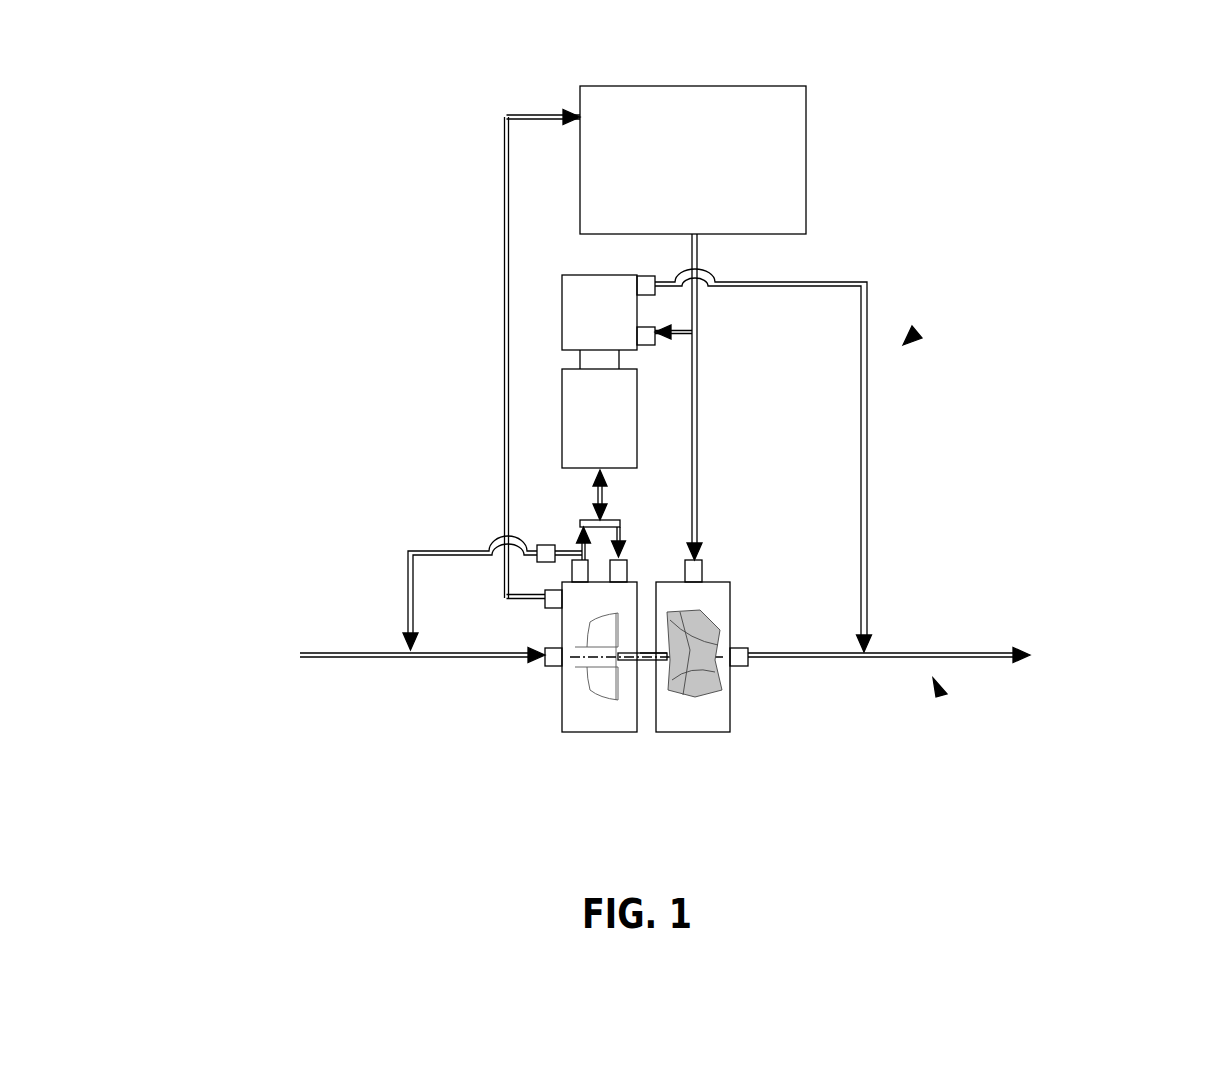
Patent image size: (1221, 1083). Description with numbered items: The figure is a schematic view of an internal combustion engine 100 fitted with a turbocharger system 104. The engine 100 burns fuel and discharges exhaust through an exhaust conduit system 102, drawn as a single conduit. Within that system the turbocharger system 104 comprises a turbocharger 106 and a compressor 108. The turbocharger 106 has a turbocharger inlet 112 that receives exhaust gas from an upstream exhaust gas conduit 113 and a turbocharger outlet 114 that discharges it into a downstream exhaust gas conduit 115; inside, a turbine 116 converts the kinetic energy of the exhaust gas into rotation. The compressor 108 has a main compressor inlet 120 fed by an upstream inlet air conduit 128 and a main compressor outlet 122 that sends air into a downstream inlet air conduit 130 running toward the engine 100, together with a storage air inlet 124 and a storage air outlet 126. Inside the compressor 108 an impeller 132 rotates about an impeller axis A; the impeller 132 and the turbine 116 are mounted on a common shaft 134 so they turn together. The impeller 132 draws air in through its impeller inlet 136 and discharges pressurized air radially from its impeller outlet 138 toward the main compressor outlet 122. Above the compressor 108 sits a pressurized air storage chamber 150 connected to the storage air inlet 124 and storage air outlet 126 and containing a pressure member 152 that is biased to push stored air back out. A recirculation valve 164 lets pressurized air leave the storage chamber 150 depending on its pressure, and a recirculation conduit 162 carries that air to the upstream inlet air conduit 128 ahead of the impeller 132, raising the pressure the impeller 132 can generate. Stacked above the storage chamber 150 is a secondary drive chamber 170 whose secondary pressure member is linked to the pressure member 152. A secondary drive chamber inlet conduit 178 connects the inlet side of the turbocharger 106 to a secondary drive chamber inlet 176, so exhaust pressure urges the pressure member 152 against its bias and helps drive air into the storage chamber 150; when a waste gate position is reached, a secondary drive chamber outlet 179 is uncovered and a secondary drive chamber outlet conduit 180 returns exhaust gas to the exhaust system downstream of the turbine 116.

The internal combustion engine 100 is at (713, 130).
The exhaust conduit system 102 is at (945, 692).
The turbocharger system 104 is at (910, 338).
The turbocharger 106 is at (730, 708).
The compressor 108 is at (562, 702).
The turbocharger inlet 112 is at (702, 572).
The upstream exhaust gas conduit 113 is at (698, 405).
The turbocharger outlet 114 is at (743, 667).
The downstream exhaust gas conduit 115 is at (897, 655).
The turbine 116 is at (687, 690).
The main compressor inlet 120 is at (550, 667).
The main compressor outlet 122 is at (548, 612).
The storage air inlet 124 is at (628, 567).
The storage air outlet 126 is at (570, 567).
The upstream inlet air conduit 128 is at (357, 660).
The downstream inlet air conduit 130 is at (505, 242).
The impeller 132 is at (613, 658).
The common shaft 134 is at (628, 663).
The impeller inlet 136 is at (585, 677).
The impeller outlet 138 is at (608, 612).
The pressurized air storage chamber 150 is at (562, 420).
The pressure member 152 is at (620, 522).
The recirculation conduit 162 is at (432, 552).
The recirculation valve 164 is at (540, 545).
The secondary drive chamber 170 is at (562, 317).
The secondary drive chamber inlet 176 is at (655, 325).
The secondary drive chamber inlet conduit 178 is at (683, 328).
The secondary drive chamber outlet 179 is at (653, 276).
The secondary drive chamber outlet conduit 180 is at (865, 430).
The impeller axis A is at (627, 663).